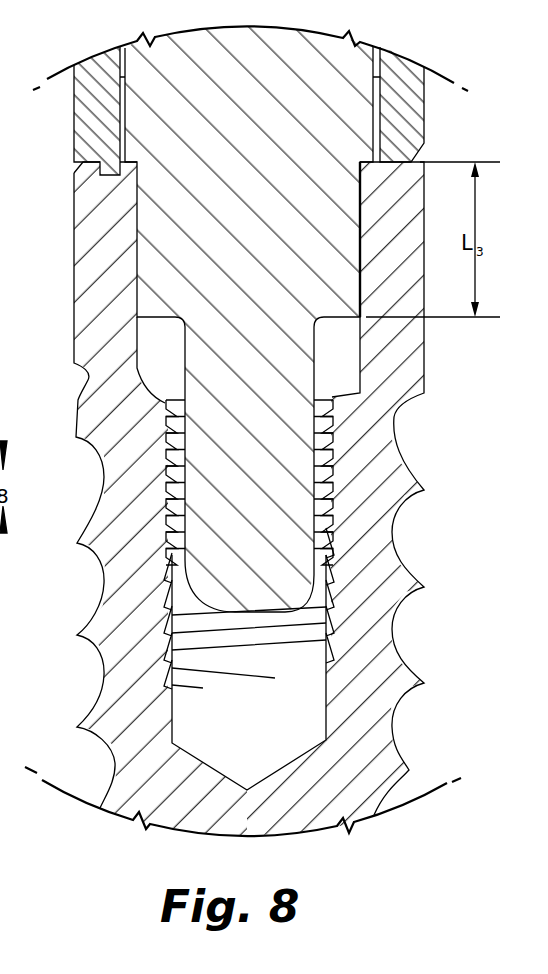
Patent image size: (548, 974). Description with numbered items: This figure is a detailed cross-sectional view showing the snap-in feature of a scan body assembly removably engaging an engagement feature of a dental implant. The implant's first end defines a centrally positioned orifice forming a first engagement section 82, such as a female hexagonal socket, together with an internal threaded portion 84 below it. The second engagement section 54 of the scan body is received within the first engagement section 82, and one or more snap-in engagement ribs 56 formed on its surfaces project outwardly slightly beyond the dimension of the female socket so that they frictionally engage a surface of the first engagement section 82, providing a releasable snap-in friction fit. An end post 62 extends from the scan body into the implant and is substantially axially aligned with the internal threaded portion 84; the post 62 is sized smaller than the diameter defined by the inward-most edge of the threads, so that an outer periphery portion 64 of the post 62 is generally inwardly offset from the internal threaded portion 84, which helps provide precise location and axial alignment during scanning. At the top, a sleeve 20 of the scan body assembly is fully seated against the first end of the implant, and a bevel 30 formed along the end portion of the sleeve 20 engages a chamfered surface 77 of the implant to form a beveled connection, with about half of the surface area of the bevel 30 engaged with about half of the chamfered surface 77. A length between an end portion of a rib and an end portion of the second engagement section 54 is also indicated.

The sleeve 20 is at (95, 97).
The bevel 30 is at (415, 153).
The second engagement section 54 is at (272, 241).
The engagement ribs 56 is at (143, 304).
The end post 62 is at (273, 508).
The outer periphery portion 64 is at (334, 455).
The chamfered surface 77 is at (122, 232).
The first engagement section 82 is at (150, 360).
The internal threaded portion 84 is at (178, 496).